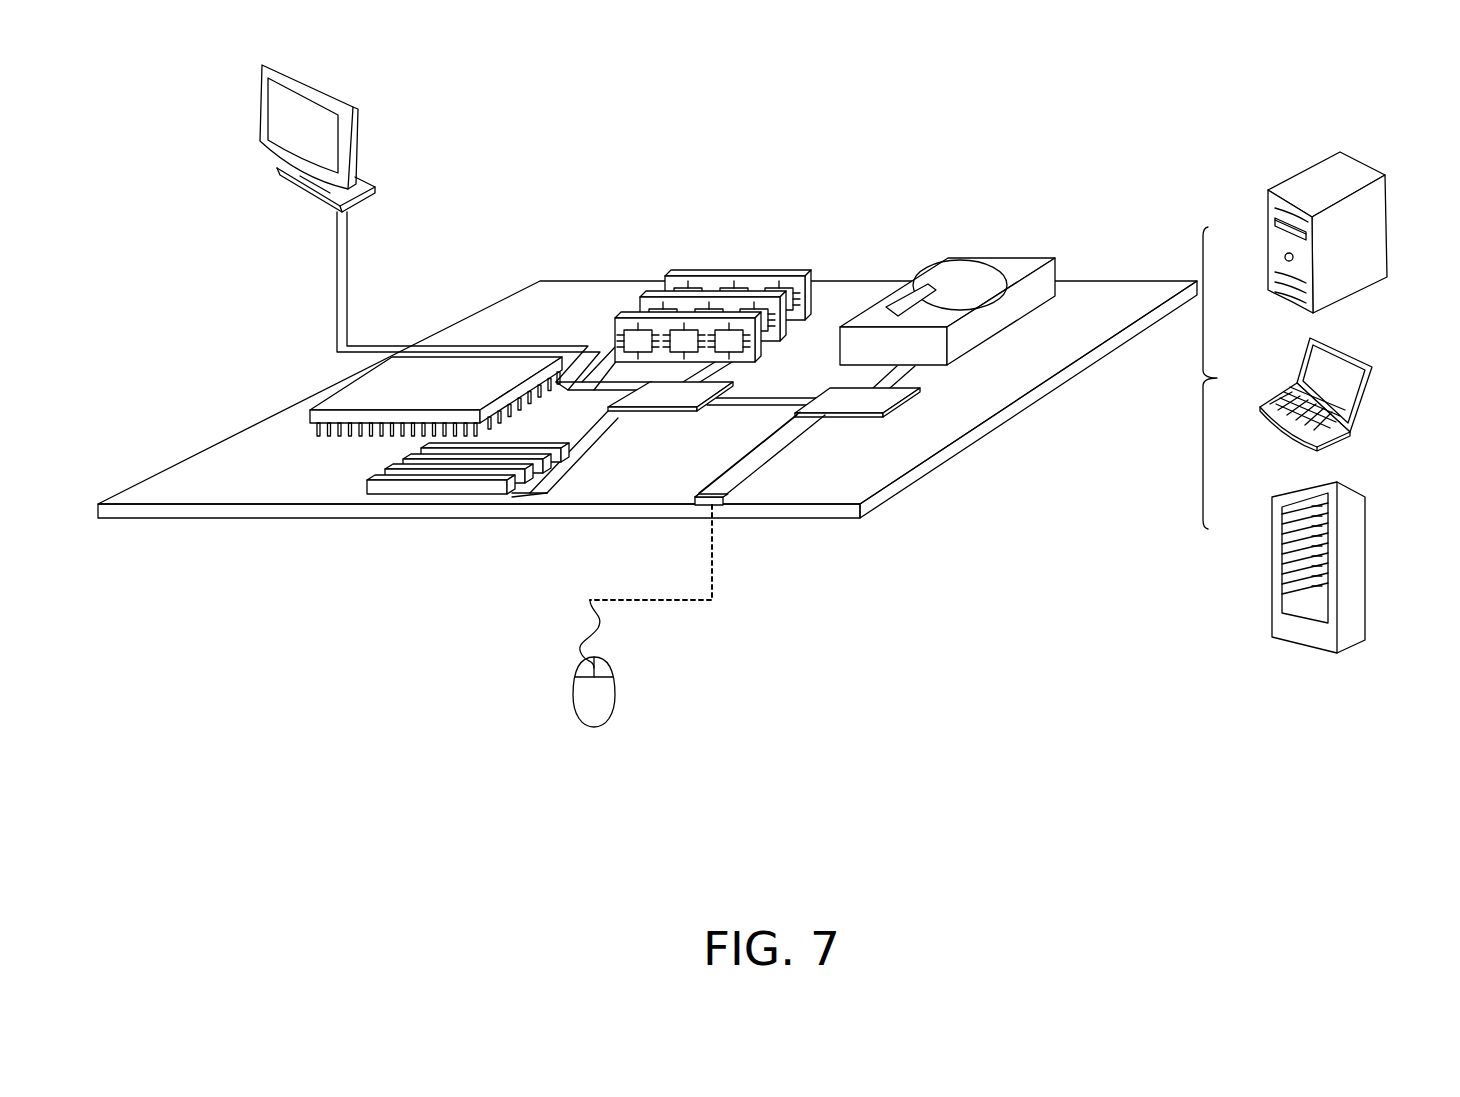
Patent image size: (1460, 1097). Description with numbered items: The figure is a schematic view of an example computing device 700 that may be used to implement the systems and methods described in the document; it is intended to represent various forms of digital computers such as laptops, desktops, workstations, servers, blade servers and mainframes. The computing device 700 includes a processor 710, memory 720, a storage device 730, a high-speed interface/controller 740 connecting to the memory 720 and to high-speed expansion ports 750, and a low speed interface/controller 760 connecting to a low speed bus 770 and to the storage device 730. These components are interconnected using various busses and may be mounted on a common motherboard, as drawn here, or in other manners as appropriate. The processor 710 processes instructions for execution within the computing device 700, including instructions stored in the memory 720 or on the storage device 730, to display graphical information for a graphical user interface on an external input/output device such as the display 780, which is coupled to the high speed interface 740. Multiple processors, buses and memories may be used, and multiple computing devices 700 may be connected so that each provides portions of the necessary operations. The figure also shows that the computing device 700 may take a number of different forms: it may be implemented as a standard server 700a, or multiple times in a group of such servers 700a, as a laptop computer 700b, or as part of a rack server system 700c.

The computing device 700 is at (815, 128).
The standard server 700a is at (1299, 172).
The laptop computer 700b is at (1355, 358).
The rack server system 700c is at (1360, 544).
The processor 710 is at (308, 411).
The memory 720 is at (731, 274).
The storage device 730 is at (994, 258).
The high-speed interface/controller 740 is at (675, 412).
The high-speed expansion ports 750 is at (368, 485).
The low speed interface/controller 760 is at (830, 397).
The low speed bus 770 is at (725, 506).
The display 780 is at (259, 108).